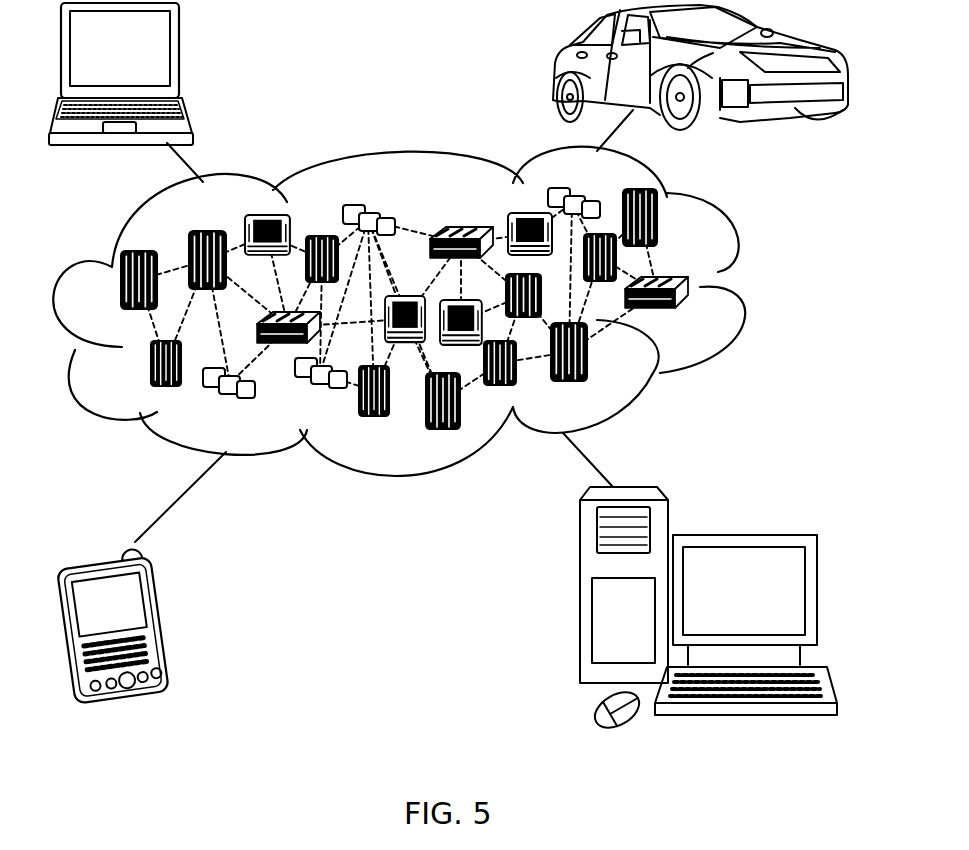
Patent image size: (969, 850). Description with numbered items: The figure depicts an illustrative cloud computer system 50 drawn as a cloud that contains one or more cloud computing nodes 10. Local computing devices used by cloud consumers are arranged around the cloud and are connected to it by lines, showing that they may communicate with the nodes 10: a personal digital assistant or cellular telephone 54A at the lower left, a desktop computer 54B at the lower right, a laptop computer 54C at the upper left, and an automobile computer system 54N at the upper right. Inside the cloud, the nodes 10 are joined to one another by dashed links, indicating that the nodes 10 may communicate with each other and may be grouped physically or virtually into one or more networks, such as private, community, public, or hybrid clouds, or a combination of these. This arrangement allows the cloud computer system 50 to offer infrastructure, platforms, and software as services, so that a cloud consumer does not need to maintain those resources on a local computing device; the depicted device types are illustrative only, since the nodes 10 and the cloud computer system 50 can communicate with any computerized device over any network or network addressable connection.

The laptop computer 54C is at (181, 53).
The automobile computer system 54N is at (555, 68).
The personal digital assistant or cellular telephone 54A is at (171, 618).
The desktop computer 54B is at (740, 535).
The cloud computer system 50 is at (738, 288).
The cloud computing node 10 is at (689, 314).